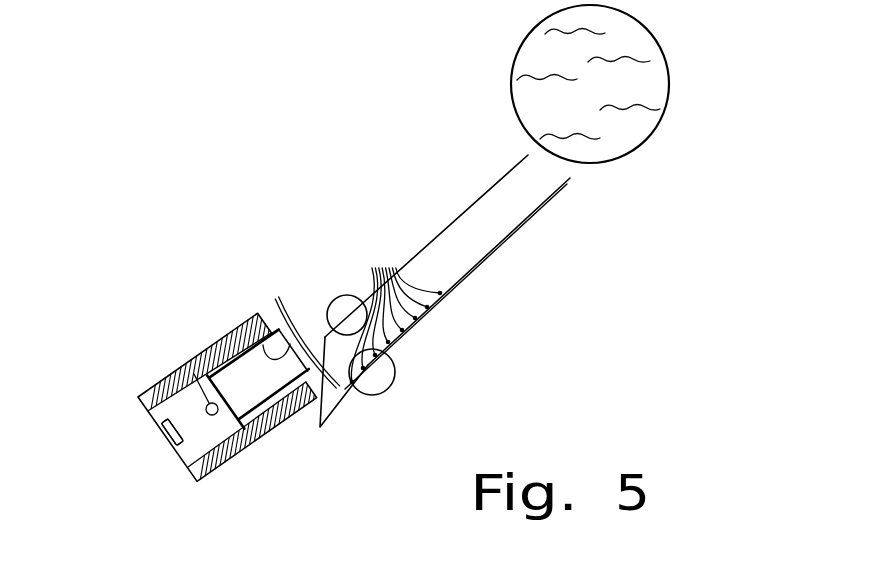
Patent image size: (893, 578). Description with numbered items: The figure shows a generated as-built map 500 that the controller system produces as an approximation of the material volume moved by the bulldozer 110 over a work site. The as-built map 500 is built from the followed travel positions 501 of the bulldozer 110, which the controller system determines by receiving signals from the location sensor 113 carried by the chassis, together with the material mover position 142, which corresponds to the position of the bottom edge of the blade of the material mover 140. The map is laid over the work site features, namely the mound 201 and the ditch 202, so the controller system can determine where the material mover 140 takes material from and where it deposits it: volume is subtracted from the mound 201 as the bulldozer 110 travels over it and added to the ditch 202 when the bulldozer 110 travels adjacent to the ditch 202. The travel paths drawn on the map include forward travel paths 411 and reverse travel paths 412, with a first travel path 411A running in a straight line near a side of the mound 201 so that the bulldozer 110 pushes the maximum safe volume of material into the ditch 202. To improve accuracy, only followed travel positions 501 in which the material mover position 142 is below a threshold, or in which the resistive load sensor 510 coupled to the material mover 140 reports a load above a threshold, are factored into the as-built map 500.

The as-built map 500 is at (265, 144).
The bulldozer 110 is at (216, 361).
The location sensor 113 is at (190, 375).
The resistive load sensor 510 is at (267, 336).
The material mover 140 is at (276, 298).
The material mover position 142 is at (302, 338).
The forward travel paths 411 is at (430, 330).
The first travel path 411A is at (415, 336).
The reverse travel paths 412 is at (396, 375).
The mound 201 is at (340, 296).
The followed travel positions 501 is at (396, 312).
The ditch 202 is at (668, 64).